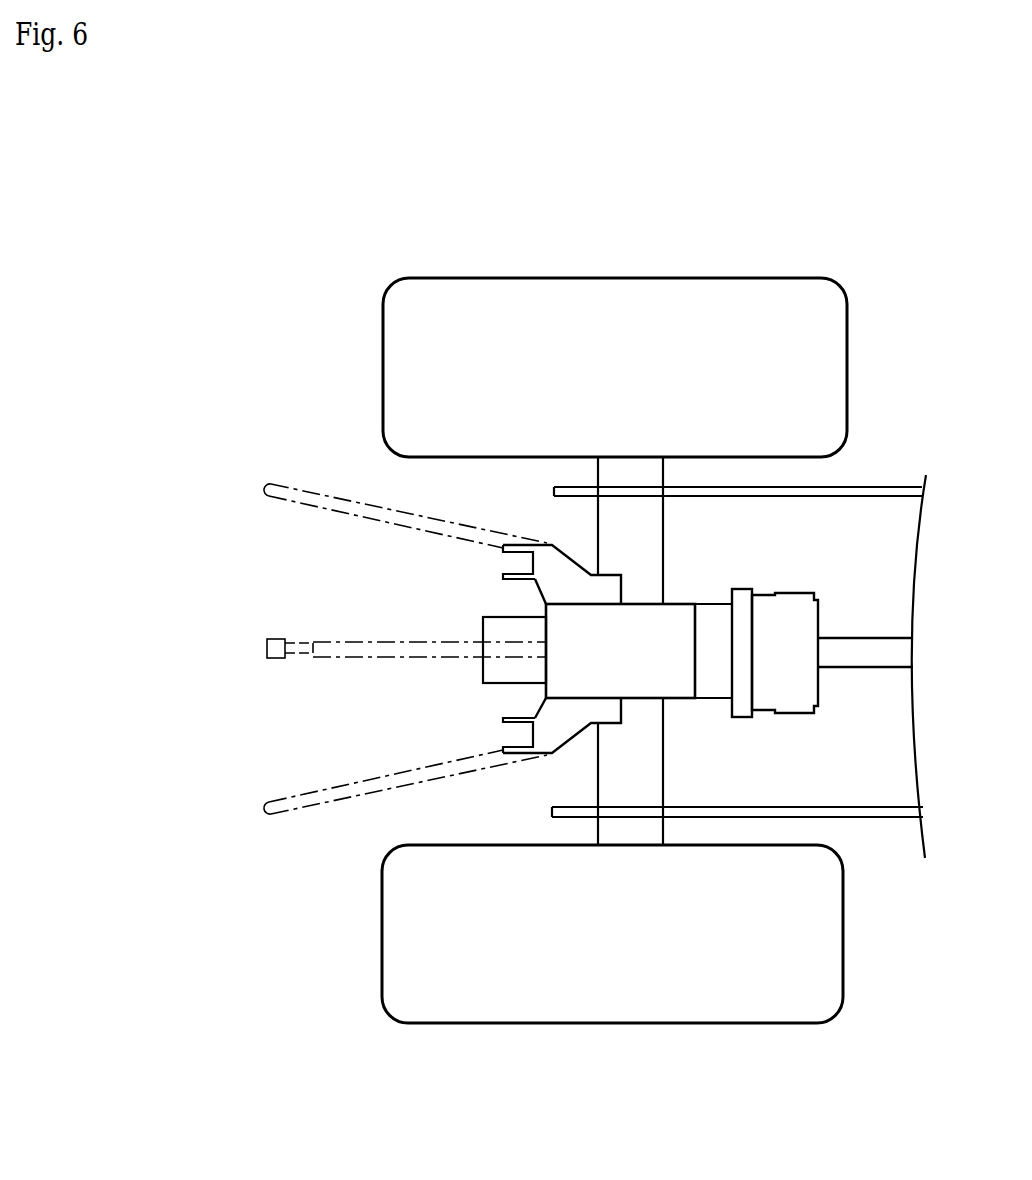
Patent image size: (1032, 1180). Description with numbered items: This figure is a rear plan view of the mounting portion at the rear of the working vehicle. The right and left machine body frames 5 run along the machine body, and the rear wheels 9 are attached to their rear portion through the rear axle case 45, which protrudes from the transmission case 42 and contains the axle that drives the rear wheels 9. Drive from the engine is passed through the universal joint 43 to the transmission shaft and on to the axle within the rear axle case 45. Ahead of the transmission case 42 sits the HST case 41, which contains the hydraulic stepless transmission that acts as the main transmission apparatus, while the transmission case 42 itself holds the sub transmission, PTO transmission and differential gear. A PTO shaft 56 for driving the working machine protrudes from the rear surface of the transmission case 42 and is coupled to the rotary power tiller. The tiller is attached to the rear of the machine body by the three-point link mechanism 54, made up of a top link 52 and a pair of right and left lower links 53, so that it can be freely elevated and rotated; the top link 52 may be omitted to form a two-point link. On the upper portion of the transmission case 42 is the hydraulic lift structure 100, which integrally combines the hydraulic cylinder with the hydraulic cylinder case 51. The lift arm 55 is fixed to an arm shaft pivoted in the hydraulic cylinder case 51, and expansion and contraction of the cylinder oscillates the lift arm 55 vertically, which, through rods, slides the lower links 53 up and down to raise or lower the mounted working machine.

The rear wheel 9 is at (627, 278).
The machine body frame 5 is at (877, 818).
The rear axle case 45 is at (597, 792).
The hydraulic lift structure 100 is at (694, 716).
The transmission case 42 is at (703, 603).
The HST case 41 is at (821, 605).
The universal joint 43 is at (865, 668).
The hydraulic cylinder case 51 is at (547, 688).
The lift arm 55 is at (503, 575).
The PTO shaft 56 is at (483, 668).
The top link 52 is at (263, 650).
The lower link 53 is at (265, 490).
The three-point link mechanism 54 is at (307, 453).